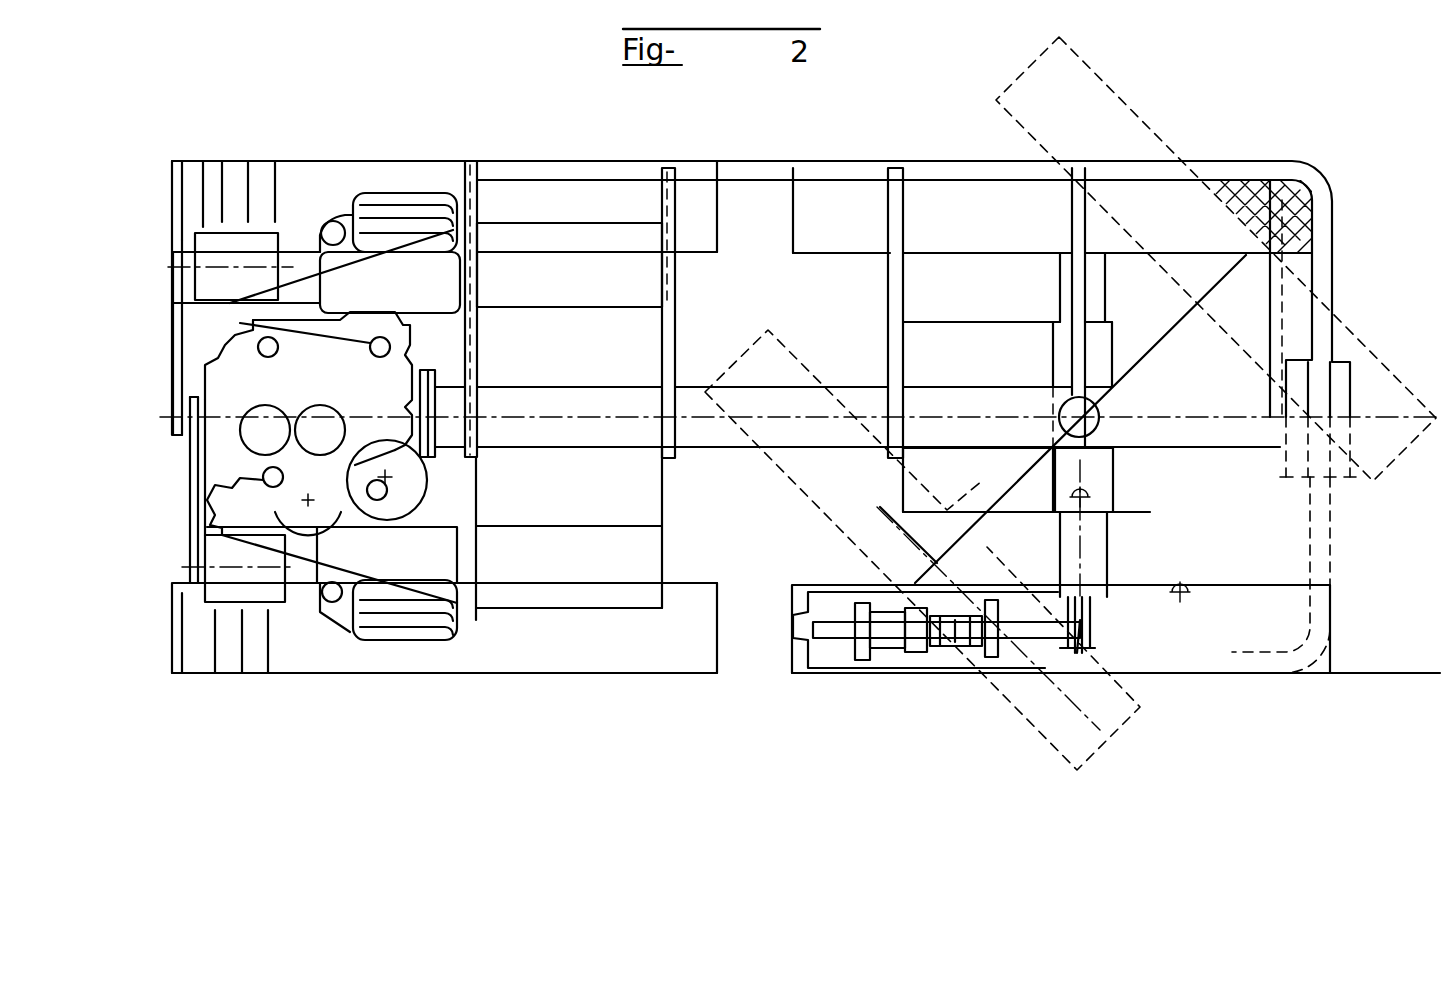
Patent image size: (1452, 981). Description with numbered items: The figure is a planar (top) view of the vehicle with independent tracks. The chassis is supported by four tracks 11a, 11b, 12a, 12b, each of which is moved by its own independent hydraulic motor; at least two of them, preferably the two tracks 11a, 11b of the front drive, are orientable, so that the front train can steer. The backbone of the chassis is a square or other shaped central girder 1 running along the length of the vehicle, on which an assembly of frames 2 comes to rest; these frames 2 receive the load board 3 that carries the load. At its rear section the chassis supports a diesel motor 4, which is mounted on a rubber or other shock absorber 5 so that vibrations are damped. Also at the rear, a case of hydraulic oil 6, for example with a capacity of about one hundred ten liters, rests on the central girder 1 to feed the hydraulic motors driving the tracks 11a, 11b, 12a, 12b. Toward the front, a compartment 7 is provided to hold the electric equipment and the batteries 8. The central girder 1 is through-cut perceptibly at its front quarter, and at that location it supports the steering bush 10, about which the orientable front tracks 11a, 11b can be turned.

The central girder 1 is at (943, 387).
The frames 2 is at (477, 195).
The load board 3 is at (1251, 190).
The diesel motor 4 is at (248, 375).
The shock absorber 5 is at (370, 343).
The case of hydraulic oil 6 is at (612, 307).
The compartment 7 is at (990, 353).
The batteries 8 is at (985, 495).
The steering bush 10 is at (1083, 440).
The track 11a is at (897, 663).
The track 11b is at (1157, 197).
The track 12a is at (443, 657).
The track 12b is at (315, 195).